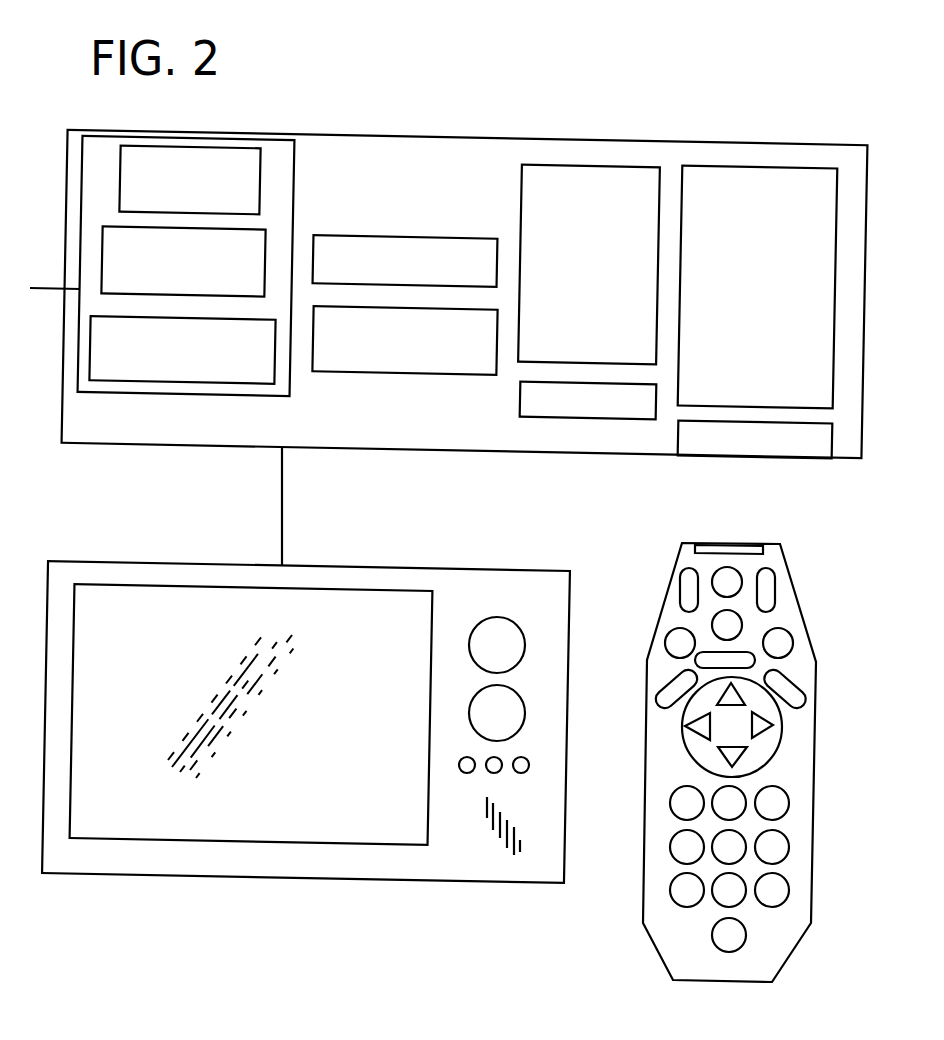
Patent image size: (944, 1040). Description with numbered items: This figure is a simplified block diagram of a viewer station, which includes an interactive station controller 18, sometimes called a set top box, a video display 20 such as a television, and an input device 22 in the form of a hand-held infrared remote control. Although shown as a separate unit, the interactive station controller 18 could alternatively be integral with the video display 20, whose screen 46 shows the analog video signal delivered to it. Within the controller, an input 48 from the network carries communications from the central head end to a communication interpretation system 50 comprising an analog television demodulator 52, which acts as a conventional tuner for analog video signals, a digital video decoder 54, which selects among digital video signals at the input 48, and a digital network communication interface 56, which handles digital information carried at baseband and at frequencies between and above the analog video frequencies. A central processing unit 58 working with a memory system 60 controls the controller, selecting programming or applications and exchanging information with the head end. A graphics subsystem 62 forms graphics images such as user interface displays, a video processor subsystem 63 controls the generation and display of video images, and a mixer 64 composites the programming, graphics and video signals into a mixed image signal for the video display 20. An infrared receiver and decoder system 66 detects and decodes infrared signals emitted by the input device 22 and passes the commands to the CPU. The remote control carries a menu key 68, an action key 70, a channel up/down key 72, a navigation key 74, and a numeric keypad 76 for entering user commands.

The interactive station controller 18 is at (355, 452).
The video display 20 is at (417, 567).
The input device 22 is at (662, 608).
The screen 46 is at (190, 625).
The input 48 is at (50, 290).
The communication interpretation system 50 is at (293, 183).
The analog television demodulator 52 is at (213, 147).
The digital video decoder 54 is at (265, 243).
The digital network communication interface 56 is at (217, 383).
The central processing unit 58 is at (598, 176).
The memory system 60 is at (815, 302).
The graphics subsystem 62 is at (398, 237).
The video processor subsystem 63 is at (408, 373).
The mixer 64 is at (572, 418).
The infrared receiver and decoder system 66 is at (793, 458).
The menu key 68 is at (733, 653).
The action key 70 is at (662, 688).
The channel up/down key 72 is at (767, 592).
The navigation key 74 is at (695, 750).
The numeric keypad 76 is at (658, 848).